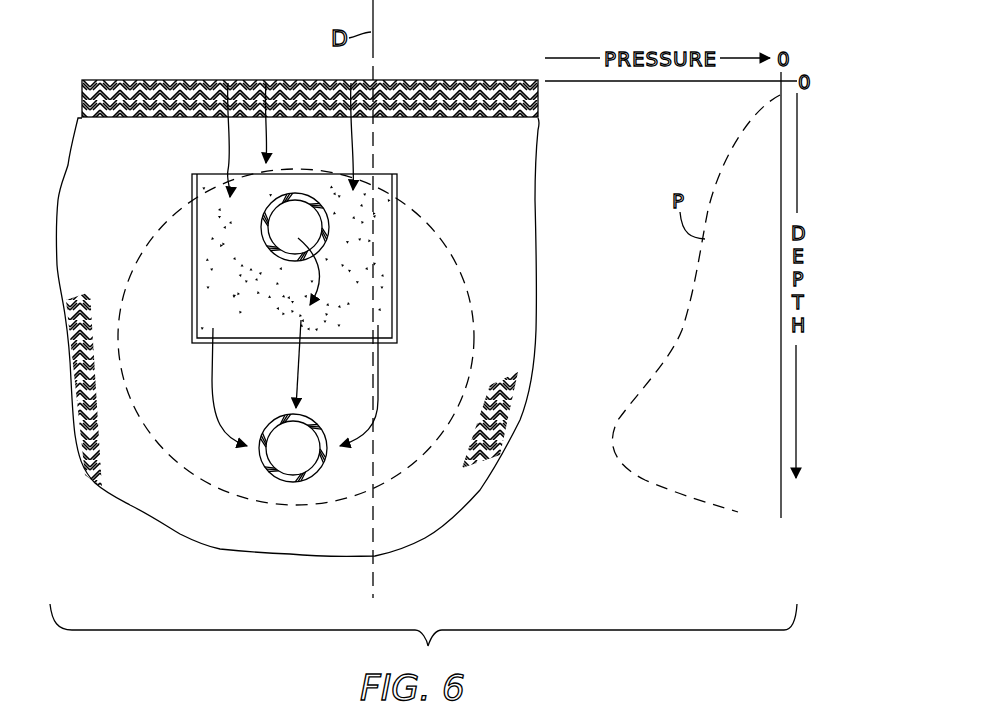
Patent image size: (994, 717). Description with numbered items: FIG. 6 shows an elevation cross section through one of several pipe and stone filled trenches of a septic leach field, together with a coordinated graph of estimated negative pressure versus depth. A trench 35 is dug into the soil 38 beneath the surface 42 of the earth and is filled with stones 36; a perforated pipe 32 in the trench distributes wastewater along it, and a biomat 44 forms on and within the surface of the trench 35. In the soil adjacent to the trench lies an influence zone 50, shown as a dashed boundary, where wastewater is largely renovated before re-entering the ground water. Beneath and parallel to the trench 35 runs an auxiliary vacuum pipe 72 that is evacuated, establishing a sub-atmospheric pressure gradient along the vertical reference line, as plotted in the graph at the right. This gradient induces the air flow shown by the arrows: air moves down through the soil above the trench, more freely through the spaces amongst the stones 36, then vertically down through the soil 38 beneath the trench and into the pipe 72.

The perforated pipe 32 is at (295, 193).
The trench 35 is at (193, 249).
The stones 36 is at (222, 271).
The soil 38 is at (506, 198).
The surface of the earth 42 is at (184, 80).
The biomat 44 is at (200, 320).
The influence zone 50 is at (437, 264).
The auxiliary vacuum pipe 72 is at (293, 483).